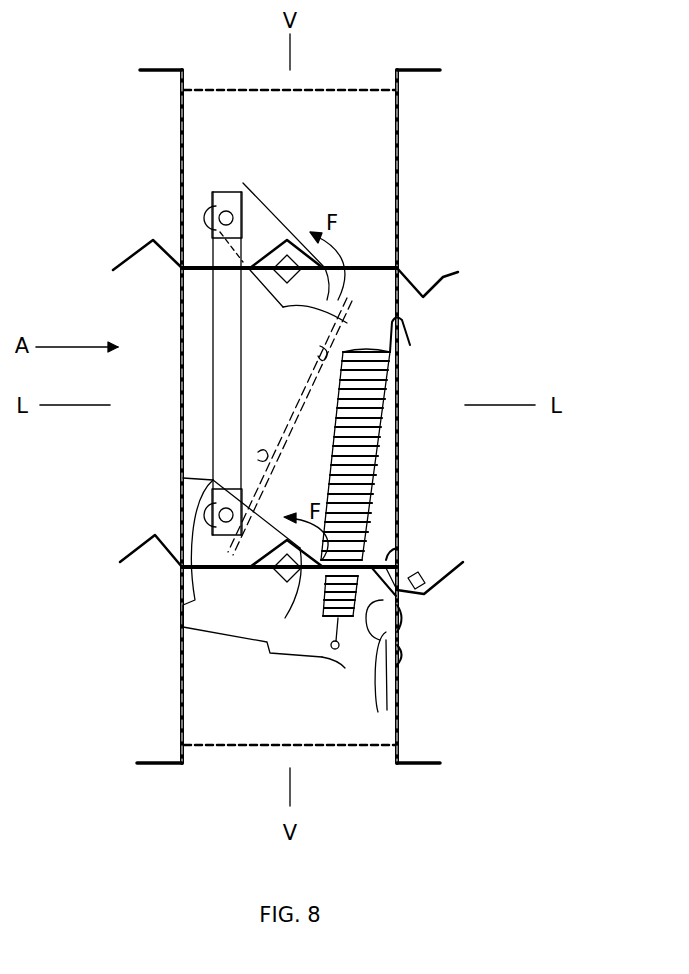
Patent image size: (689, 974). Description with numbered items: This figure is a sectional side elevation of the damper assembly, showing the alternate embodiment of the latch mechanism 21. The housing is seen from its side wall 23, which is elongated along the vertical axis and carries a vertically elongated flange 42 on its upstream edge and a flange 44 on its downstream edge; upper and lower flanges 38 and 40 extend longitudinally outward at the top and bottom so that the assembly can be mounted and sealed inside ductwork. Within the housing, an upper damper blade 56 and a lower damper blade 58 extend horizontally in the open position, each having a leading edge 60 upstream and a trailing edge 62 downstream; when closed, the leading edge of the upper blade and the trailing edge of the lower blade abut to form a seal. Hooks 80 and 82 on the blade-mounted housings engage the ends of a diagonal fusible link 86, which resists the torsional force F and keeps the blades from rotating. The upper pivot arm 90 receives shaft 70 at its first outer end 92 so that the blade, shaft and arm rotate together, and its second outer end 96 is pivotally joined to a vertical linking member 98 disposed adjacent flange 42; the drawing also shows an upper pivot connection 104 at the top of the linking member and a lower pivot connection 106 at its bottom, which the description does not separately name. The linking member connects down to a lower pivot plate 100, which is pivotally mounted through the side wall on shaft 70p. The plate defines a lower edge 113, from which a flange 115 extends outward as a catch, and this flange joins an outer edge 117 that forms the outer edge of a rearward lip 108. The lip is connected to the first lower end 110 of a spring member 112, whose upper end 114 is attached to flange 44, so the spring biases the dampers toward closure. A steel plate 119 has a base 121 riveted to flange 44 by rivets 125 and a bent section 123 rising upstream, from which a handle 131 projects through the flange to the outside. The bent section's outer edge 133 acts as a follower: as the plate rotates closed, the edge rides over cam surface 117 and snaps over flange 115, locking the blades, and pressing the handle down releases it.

The latch mechanism 21 is at (260, 178).
The side wall 23 is at (258, 130).
The upper flange 38 is at (140, 70).
The lower flange 40 is at (137, 763).
The flange 42 is at (182, 178).
The flange 44 is at (398, 520).
The upper damper blade 56 is at (352, 266).
The lower damper blade 58 is at (366, 566).
The leading edge 60 is at (113, 270).
The trailing edge 62 is at (458, 272).
The shaft 70 is at (276, 292).
The shaft 70p is at (285, 612).
The hook 80 is at (272, 458).
The hook 82 is at (322, 354).
The fusible link 86 is at (286, 418).
The upper pivot arm 90 is at (278, 202).
The first outer end 92 is at (338, 321).
The second outer end 96 is at (243, 183).
The linking member 98 is at (213, 358).
The lower pivot plate 100 is at (230, 607).
The upper bracket 104 is at (222, 210).
The lower bracket 106 is at (212, 483).
The lip 108 is at (312, 668).
The first lower end 110 is at (348, 628).
The spring member 112 is at (373, 467).
The lower edge 113 is at (222, 643).
The upper end 114 is at (414, 334).
The flange 115 is at (264, 650).
The outer edge 117 is at (294, 658).
The plate 119 is at (380, 686).
The base 121 is at (402, 660).
The bent section 123 is at (366, 621).
The rivets 125 is at (405, 630).
The handle 131 is at (407, 597).
The outer edge 133 is at (398, 548).